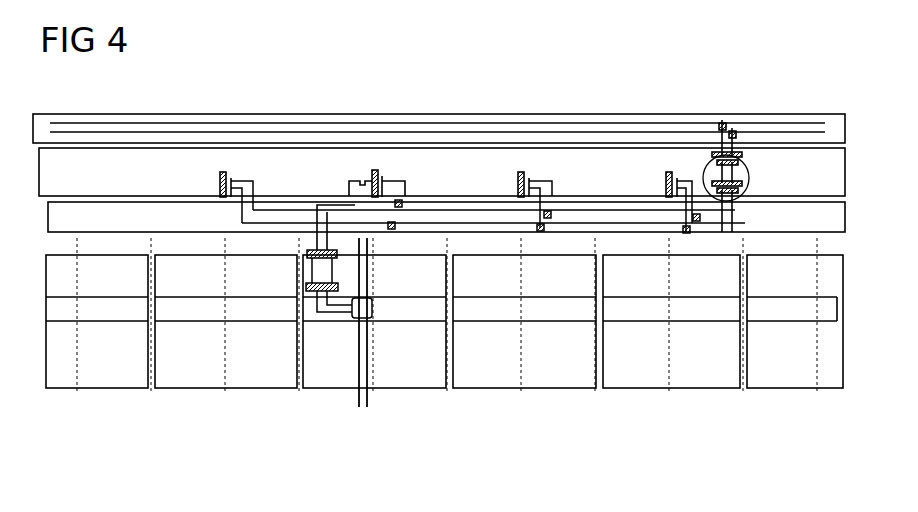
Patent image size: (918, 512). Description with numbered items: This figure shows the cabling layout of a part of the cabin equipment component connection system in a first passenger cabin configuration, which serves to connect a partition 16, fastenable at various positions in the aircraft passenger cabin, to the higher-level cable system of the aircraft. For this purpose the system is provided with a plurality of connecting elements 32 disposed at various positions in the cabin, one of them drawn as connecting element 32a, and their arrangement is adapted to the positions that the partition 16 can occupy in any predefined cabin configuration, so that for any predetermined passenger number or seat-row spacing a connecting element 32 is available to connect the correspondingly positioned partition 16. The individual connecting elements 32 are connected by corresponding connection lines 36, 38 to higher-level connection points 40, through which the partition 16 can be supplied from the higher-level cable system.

The partition 16 is at (358, 399).
The connecting element 32 is at (223, 171).
The gate line 32a is at (375, 170).
The connection line 36 is at (253, 185).
The connection line 38 is at (626, 233).
The higher-level connection point 40 is at (750, 169).